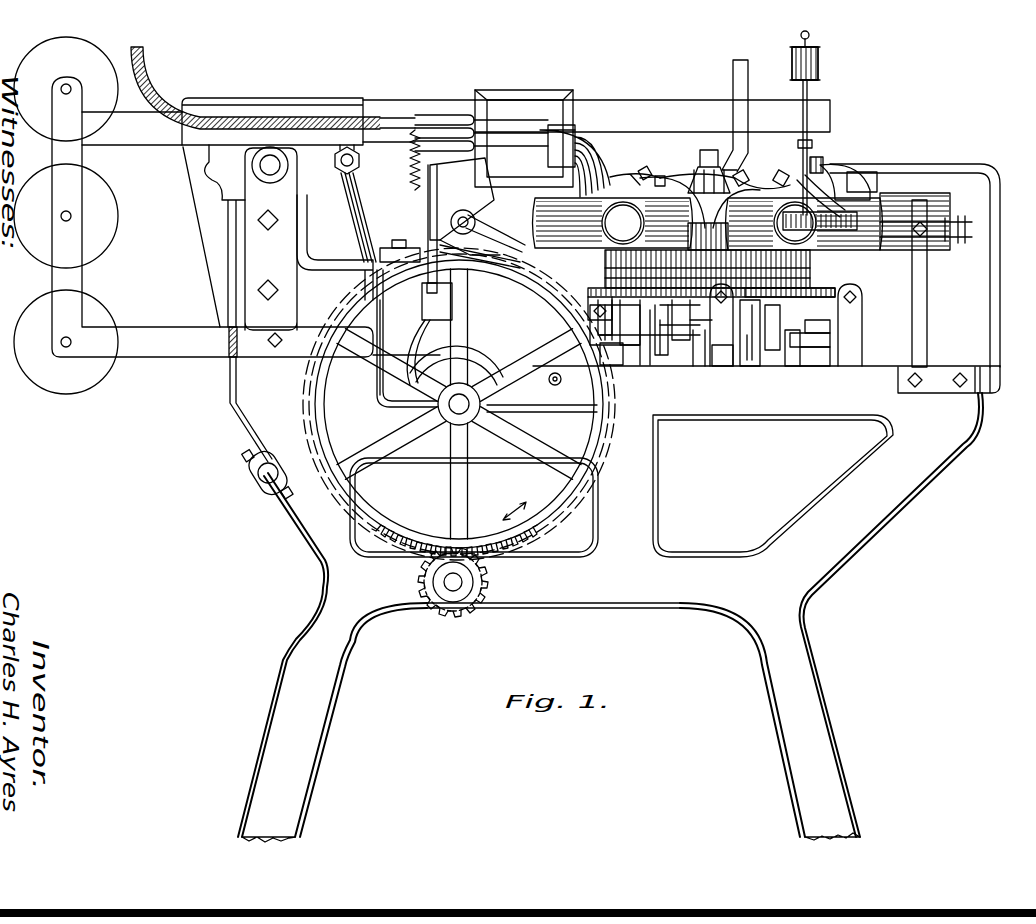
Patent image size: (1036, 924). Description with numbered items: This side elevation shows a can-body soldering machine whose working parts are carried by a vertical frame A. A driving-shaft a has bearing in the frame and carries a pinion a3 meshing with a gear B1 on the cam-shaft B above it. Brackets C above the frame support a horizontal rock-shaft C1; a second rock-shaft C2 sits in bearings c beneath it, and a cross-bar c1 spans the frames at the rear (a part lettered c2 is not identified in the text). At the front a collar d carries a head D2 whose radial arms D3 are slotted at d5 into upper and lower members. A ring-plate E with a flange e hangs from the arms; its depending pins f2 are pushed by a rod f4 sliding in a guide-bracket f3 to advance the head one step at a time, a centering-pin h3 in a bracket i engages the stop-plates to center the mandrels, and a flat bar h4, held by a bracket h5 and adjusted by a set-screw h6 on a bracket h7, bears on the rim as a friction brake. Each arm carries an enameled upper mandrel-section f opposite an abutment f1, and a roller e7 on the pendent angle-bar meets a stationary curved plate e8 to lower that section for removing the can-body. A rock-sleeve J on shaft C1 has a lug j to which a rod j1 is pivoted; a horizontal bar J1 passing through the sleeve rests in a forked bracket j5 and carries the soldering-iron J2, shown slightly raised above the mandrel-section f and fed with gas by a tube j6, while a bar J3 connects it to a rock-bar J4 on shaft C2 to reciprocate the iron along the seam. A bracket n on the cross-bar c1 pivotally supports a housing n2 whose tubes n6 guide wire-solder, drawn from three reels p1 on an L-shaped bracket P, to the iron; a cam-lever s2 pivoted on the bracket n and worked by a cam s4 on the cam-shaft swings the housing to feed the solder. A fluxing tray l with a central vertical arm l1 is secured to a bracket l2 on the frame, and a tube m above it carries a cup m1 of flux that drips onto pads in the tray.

The vertical frame A is at (638, 487).
The cam-shaft B is at (440, 406).
The gear B1 is at (482, 487).
The driving-shaft a is at (462, 583).
The pinion a3 is at (420, 588).
The bracket C is at (251, 303).
The rock-shaft C1 is at (278, 168).
The rock-shaft C2 is at (262, 474).
The bearings c is at (264, 495).
The cross-bar c1 is at (393, 250).
The connecting bar c2 is at (560, 230).
The head D2 is at (740, 175).
The radial arms D3 is at (862, 174).
The collar d is at (705, 353).
The horizontally-extending slots d5 is at (700, 213).
The ring-plate E is at (595, 290).
The horizontal flange e is at (618, 290).
The roller e7 is at (663, 356).
The stationary curved plate e8 is at (768, 352).
The upper half-cylindric mandrel-section f is at (570, 250).
The abutment f1 is at (650, 180).
The depending pins f2 is at (600, 318).
The guide-bracket f3 is at (793, 350).
The rod f4 is at (832, 340).
The centering-pin h3 is at (600, 333).
The horizontal flat bar h4 is at (818, 288).
The bracket h5 is at (850, 318).
The set-screw h6 is at (721, 325).
The bracket h7 is at (718, 358).
The bracket i is at (609, 350).
The rock-sleeve J is at (322, 110).
The horizontal bar J1 is at (164, 135).
The soldering-iron J2 is at (512, 190).
The bar J3 is at (235, 97).
The rock-bar J4 is at (218, 238).
The downwardly-projecting lug j is at (344, 175).
The rod j1 is at (358, 232).
The forked bracket j5 is at (732, 78).
The tube j6 is at (388, 120).
The tray l is at (858, 250).
The central vertical arm l1 is at (838, 165).
The bracket l2 is at (912, 168).
The tube m is at (802, 116).
The cup m1 is at (818, 62).
The bracket n is at (430, 205).
The housing n2 is at (477, 206).
The tubes n6 is at (590, 143).
The L-shaped bracket P is at (200, 340).
The reels p1 is at (88, 250).
The cam-lever s2 is at (452, 300).
The cam s4 is at (440, 360).